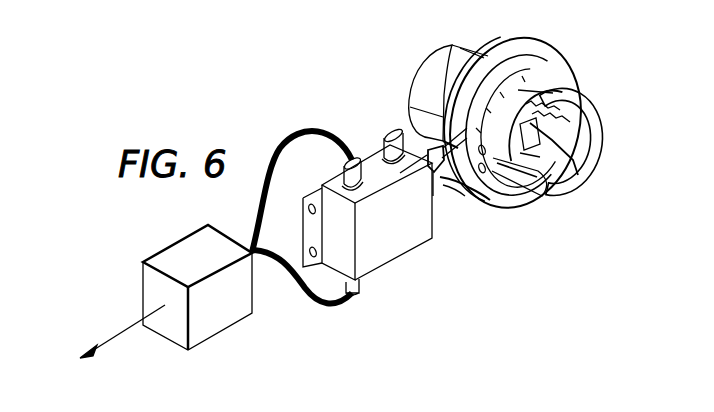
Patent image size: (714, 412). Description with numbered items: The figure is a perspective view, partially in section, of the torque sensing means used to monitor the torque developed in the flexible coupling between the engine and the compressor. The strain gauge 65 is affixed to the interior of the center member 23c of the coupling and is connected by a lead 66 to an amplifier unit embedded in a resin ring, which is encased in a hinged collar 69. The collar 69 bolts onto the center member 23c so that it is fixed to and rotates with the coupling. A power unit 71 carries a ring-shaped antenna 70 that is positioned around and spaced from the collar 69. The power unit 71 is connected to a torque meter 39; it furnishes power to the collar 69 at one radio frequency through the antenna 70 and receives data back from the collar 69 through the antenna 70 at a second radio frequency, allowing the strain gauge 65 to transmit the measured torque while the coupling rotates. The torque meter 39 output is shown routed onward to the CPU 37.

The torque meter 39 is at (228, 314).
The CPU 37 is at (96, 347).
The power unit 71 is at (401, 234).
The ring-shaped antenna 70 is at (552, 56).
The center member 23c is at (444, 101).
The hinged collar 69 is at (558, 86).
The lead 66 is at (562, 182).
The strain gauge 65 is at (541, 138).